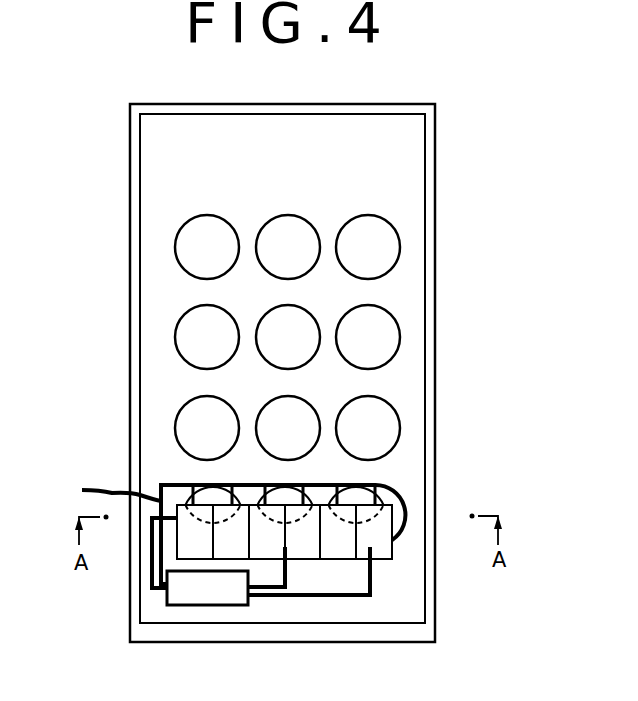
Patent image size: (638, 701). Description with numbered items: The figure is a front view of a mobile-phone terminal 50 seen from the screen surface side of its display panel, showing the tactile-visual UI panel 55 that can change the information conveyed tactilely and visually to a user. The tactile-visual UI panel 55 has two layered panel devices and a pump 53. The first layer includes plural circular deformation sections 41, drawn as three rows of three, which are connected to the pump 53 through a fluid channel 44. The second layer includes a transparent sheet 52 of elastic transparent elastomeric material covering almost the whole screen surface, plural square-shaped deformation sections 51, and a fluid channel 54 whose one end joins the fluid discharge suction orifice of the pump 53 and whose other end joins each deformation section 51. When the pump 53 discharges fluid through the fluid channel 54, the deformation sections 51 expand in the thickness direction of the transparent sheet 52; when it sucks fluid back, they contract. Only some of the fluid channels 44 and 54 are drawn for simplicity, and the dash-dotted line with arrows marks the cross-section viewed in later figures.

The deformation section 41 is at (175, 248).
The fluid channel 44 is at (152, 580).
The mobile-phone terminal 50 is at (446, 246).
The deformation section 51 is at (385, 512).
The transparent sheet 52 is at (158, 418).
The pump 53 is at (212, 607).
The fluid channel 54 is at (104, 491).
The tactile-visual UI panel 55 is at (434, 399).